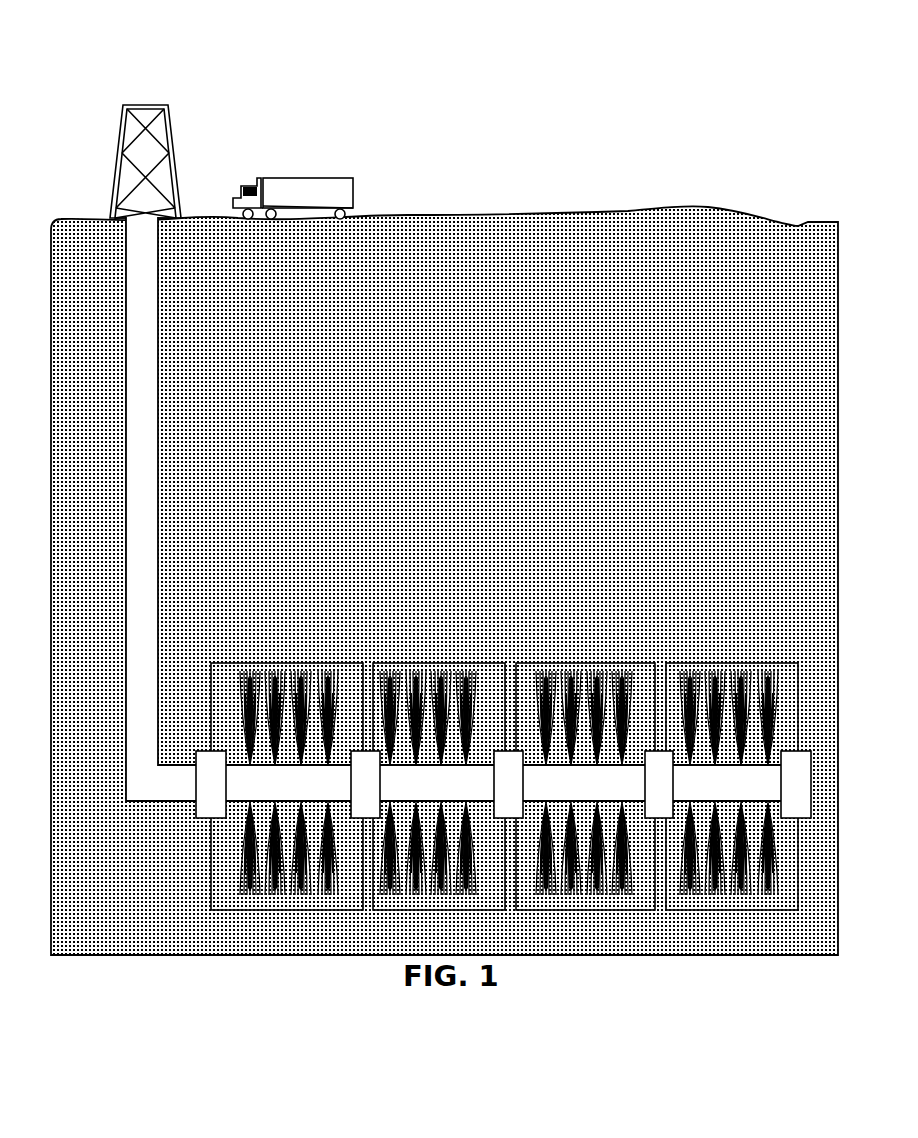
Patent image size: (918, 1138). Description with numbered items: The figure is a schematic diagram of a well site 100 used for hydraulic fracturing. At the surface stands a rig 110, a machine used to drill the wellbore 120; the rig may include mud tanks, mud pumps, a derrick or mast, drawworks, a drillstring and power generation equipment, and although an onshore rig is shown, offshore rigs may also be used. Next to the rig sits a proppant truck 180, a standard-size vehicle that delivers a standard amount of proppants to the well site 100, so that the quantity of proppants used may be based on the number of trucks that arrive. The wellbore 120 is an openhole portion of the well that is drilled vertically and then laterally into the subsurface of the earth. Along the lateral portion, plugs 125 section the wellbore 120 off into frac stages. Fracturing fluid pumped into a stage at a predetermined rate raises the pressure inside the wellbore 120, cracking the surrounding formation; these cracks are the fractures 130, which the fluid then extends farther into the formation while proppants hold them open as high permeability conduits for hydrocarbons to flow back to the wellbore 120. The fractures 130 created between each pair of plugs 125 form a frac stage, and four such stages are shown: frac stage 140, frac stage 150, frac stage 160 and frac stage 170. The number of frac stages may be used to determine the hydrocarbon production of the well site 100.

The well site 100 is at (441, 19).
The rig 110 is at (140, 97).
The wellbore 120 is at (150, 420).
The plugs 125 is at (188, 783).
The fractures 130 is at (340, 664).
The frac stage 140 is at (238, 655).
The frac stage 150 is at (422, 655).
The frac stage 160 is at (570, 655).
The frac stage 170 is at (700, 655).
The proppant truck 180 is at (288, 170).